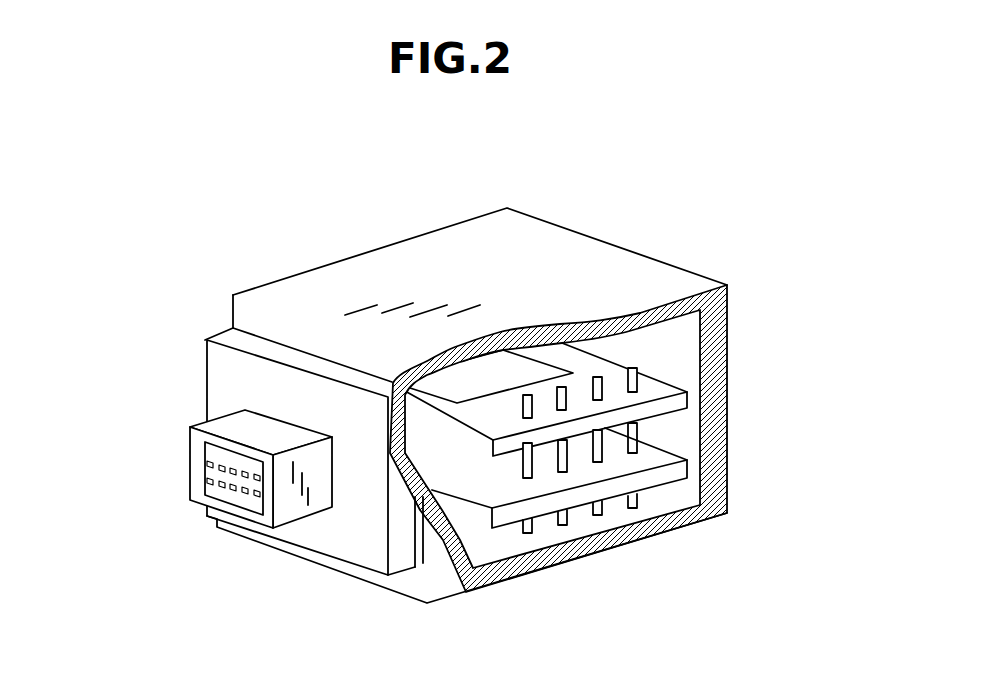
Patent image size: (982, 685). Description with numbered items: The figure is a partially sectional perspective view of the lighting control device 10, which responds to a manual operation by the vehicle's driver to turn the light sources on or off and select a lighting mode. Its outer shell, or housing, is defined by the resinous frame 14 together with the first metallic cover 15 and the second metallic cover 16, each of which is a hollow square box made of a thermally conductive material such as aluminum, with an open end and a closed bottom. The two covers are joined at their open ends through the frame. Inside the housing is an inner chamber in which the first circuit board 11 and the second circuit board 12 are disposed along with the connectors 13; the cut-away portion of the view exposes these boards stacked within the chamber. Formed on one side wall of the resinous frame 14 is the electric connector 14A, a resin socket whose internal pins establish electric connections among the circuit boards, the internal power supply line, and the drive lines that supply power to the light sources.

The lighting control device 10 is at (400, 212).
The first circuit board 11 is at (688, 400).
The second circuit board 12 is at (688, 468).
The connectors 13 is at (636, 434).
The resinous frame 14 is at (217, 370).
The electric connector 14A is at (197, 465).
The first metallic cover 15 is at (499, 290).
The second metallic cover 16 is at (596, 552).